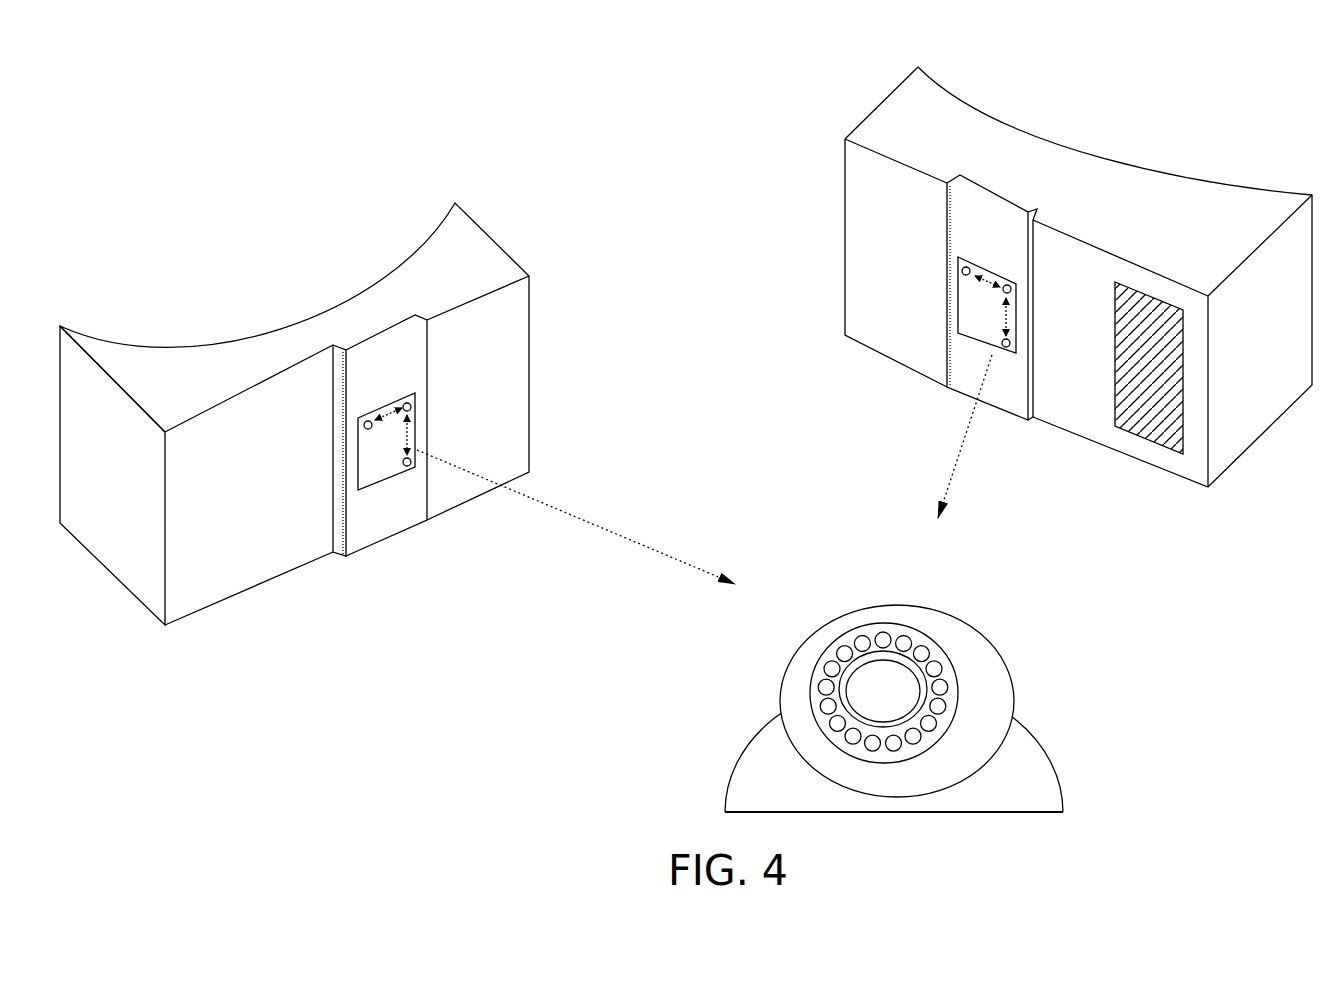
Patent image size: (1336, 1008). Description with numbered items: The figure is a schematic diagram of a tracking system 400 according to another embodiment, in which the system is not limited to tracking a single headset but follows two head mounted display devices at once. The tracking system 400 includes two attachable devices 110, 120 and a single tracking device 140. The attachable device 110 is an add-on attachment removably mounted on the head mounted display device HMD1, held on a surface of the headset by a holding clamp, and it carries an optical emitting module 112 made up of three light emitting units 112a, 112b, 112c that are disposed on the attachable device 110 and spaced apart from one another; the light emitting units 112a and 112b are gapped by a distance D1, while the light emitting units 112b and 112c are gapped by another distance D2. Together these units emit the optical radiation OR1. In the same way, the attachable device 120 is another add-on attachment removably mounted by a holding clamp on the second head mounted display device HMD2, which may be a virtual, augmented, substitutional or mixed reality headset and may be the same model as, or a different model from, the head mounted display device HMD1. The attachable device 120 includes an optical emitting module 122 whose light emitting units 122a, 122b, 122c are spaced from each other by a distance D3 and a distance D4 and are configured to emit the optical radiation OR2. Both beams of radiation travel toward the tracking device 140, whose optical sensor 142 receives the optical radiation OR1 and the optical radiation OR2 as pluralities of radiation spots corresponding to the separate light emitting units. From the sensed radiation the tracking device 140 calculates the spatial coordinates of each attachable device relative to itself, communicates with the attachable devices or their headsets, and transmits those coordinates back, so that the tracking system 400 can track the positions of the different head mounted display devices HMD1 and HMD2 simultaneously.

The tracking system 400 is at (231, 96).
The attachable device 110 is at (415, 528).
The optical emitting module 112 is at (358, 488).
The light emitting unit 112a is at (363, 426).
The light emitting unit 112b is at (411, 405).
The light emitting unit 112c is at (410, 467).
The attachable device 120 is at (948, 388).
The optical emitting module 122 is at (987, 305).
The light emitting unit 122a is at (958, 263).
The light emitting unit 122b is at (1012, 293).
The light emitting unit 122c is at (1017, 348).
The tracking device 140 is at (1048, 733).
The optical sensor 142 is at (893, 662).
The head mounted display device HMD1 is at (493, 241).
The head mounted display device HMD2 is at (1080, 151).
The distance D1 is at (388, 410).
The distance D2 is at (411, 430).
The third distance between sensors D3 is at (988, 277).
The fourth distance between sensors D4 is at (1003, 310).
The optical radiation OR1 is at (583, 518).
The optical radiation OR2 is at (958, 458).